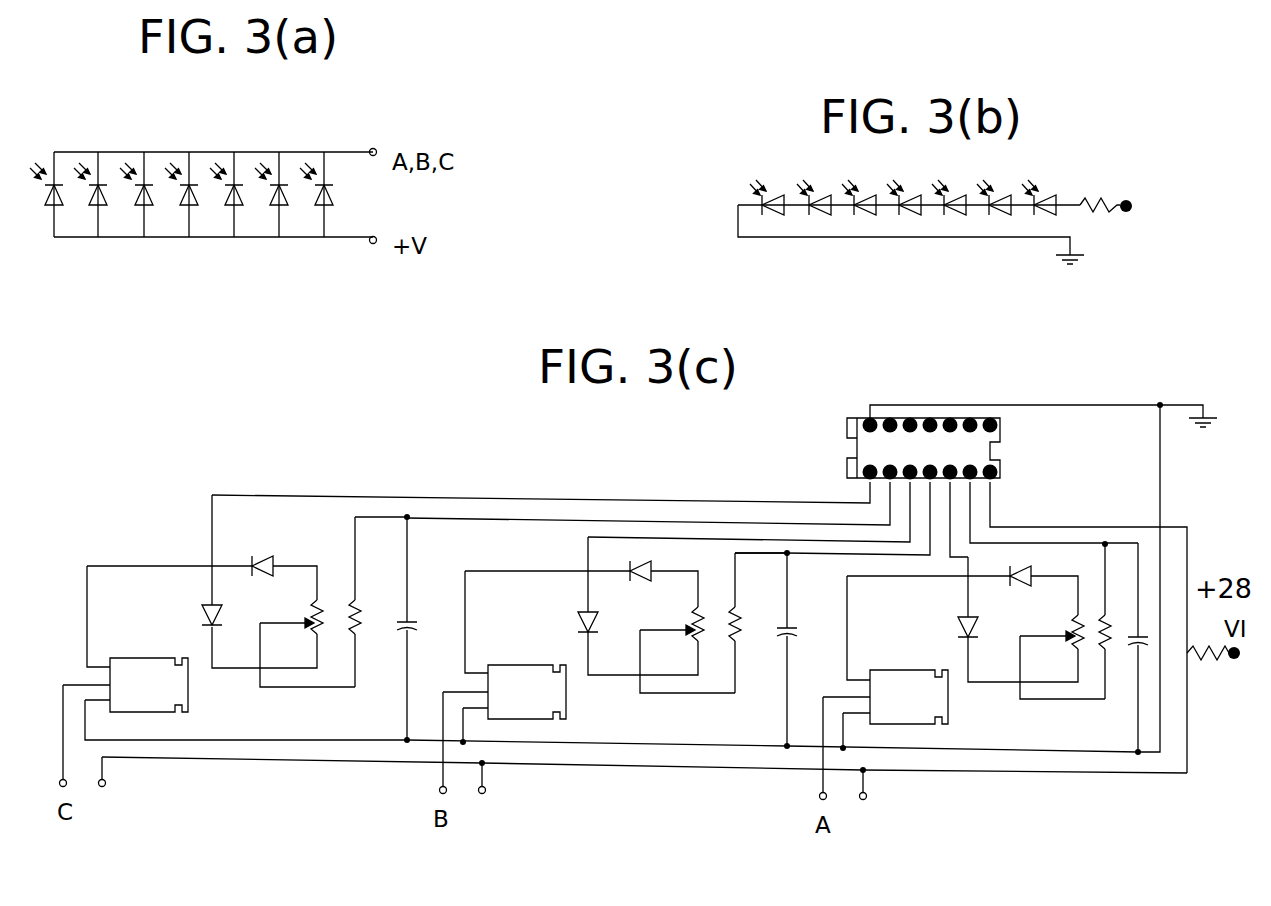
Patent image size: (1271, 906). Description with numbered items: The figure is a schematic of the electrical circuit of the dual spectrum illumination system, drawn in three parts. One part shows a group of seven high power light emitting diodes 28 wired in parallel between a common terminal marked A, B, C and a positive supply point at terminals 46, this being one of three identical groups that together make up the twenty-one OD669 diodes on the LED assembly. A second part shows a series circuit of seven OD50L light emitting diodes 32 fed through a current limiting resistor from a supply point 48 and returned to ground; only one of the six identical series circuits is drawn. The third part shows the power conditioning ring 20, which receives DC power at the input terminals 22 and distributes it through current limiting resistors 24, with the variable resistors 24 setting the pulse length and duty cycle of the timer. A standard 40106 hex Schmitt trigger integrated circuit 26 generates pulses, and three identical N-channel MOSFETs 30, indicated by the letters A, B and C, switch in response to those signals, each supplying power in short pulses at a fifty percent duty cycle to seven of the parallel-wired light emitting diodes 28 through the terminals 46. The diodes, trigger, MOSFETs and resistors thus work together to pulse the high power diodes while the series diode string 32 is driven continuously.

In FIG. 3C, the power conditioning ring 20 is at (1057, 787).
In FIG. 3C, the input terminals 22 is at (1238, 657).
In FIG. 3C, the current limiting resistors 24 is at (1072, 633).
In FIG. 3C, the hex Schmitt trigger integrated circuit 26 is at (1000, 441).
In FIG. 3A, the high power light emitting diodes 28 is at (100, 160).
In FIG. 3C, the N-channel MOSFETs 30 is at (188, 687).
In FIG. 3B, the light emitting diodes 32 is at (772, 207).
In FIG. 3A, the terminals 46 is at (373, 244).
In FIG. 3C, the terminals 46 is at (486, 792).
In FIG. 3B, the terminal 48 is at (1131, 204).